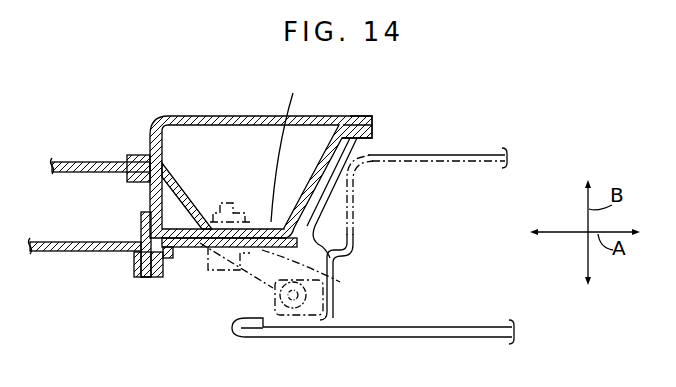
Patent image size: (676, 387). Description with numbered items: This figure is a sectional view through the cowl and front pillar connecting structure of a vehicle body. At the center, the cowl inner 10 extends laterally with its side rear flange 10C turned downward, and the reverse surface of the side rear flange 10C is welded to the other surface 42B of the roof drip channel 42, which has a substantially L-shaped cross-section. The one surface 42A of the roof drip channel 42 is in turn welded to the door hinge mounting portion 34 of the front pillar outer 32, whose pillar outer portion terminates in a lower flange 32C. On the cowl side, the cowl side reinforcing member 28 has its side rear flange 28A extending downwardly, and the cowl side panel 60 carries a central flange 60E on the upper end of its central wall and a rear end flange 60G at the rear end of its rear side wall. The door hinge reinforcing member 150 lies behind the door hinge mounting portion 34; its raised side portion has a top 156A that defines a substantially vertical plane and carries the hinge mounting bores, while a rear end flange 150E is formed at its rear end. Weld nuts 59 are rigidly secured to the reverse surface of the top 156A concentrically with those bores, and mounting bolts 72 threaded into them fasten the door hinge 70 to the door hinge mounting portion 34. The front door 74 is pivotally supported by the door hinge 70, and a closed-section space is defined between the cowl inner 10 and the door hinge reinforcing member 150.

The cowl inner 10 is at (134, 217).
The side rear flange 10C is at (147, 280).
The cowl side reinforcing member 28 is at (60, 256).
The side rear flange 28A is at (133, 265).
The roof drip channel 42 is at (170, 260).
The one surface 42A is at (183, 253).
The other surface 42B is at (163, 277).
The cowl side panel 60 is at (197, 112).
The central flange 60E is at (143, 157).
The rear end flange 60G is at (360, 115).
The door hinge reinforcing member 150 is at (180, 175).
The rear end flange 150E is at (371, 129).
The top 156A is at (296, 146).
The weld nut 59 is at (250, 205).
The front pillar outer 32 is at (339, 202).
The lower flange 32C is at (369, 160).
The door hinge mounting portion 34 is at (336, 262).
The door hinge 70 is at (332, 315).
The mounting bolt 72 is at (331, 280).
The front door 74 is at (373, 338).